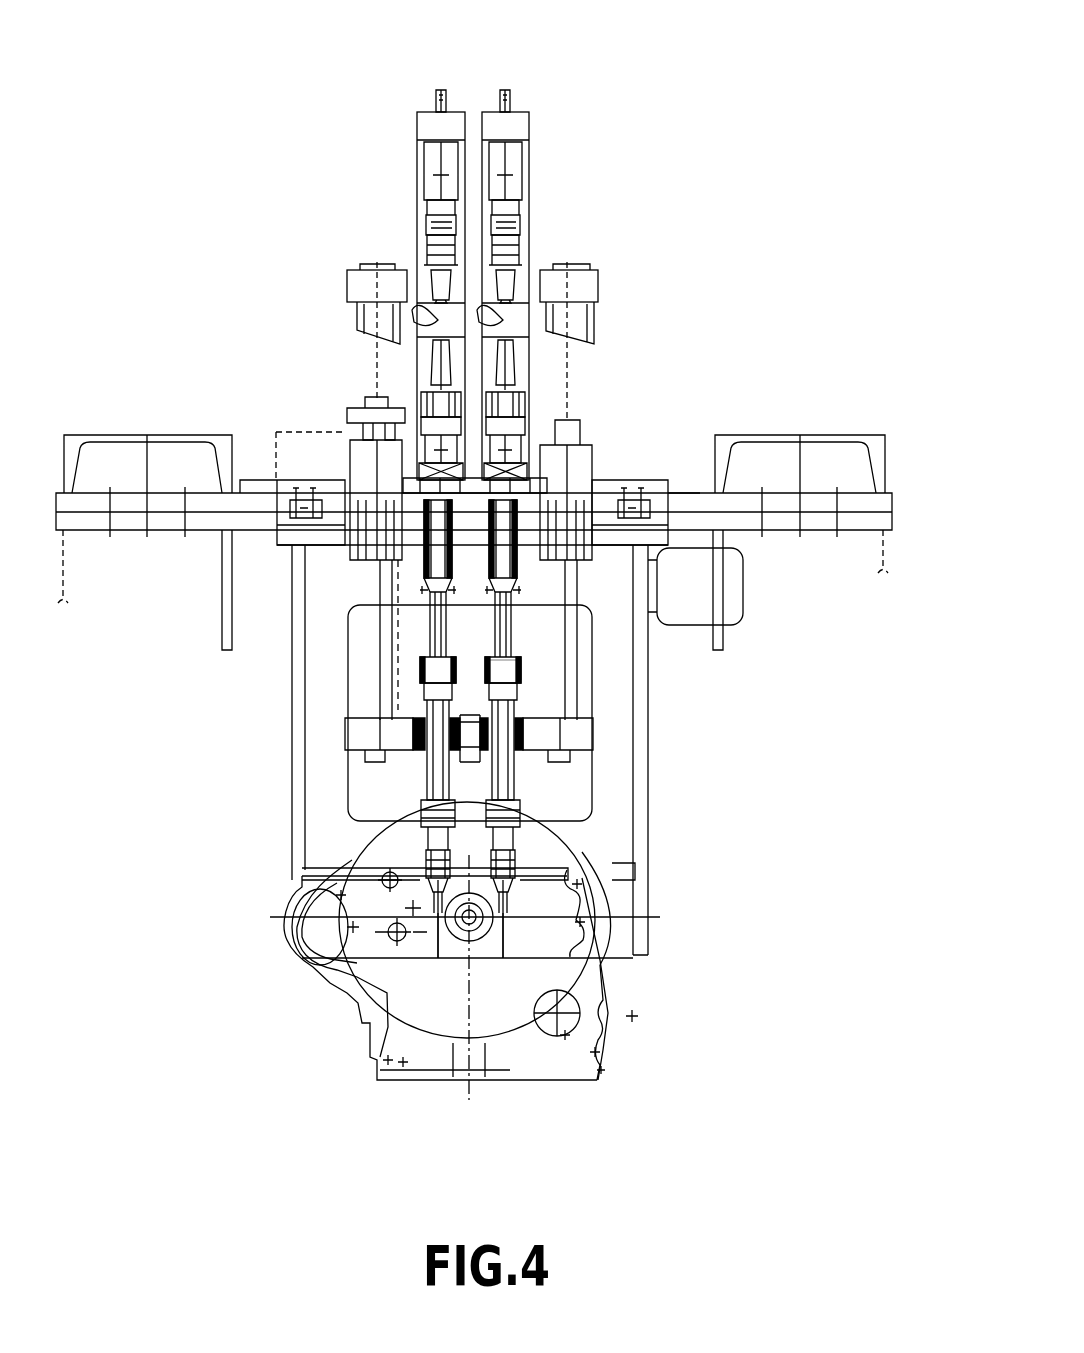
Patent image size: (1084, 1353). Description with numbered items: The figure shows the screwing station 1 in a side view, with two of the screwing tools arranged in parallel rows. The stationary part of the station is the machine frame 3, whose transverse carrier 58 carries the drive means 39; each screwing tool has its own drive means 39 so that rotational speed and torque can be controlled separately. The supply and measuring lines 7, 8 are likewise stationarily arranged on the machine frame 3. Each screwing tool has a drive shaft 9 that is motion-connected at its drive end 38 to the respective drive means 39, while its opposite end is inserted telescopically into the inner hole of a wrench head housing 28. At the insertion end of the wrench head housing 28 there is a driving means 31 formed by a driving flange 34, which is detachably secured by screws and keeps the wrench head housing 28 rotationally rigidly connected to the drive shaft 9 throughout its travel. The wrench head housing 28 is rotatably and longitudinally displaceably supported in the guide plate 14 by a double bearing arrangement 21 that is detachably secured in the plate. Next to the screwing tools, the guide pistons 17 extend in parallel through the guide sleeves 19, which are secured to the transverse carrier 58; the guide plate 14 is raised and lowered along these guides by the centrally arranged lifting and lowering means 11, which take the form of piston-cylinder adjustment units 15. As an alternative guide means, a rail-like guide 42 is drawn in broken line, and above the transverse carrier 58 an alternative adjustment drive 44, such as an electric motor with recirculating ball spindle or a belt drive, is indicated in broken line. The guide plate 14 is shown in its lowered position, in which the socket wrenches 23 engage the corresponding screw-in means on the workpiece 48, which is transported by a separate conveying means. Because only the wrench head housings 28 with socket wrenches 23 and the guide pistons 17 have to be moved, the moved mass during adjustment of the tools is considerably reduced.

The screwing station 1 is at (626, 80).
The machine frame 3 is at (199, 372).
The supply line 7 is at (539, 80).
The measuring line 8 is at (510, 102).
The drive shaft 9 is at (445, 612).
The lifting and lowering means 11 is at (475, 499).
The guide plate 14 is at (346, 735).
The piston-cylinder adjustment unit 15 is at (349, 264).
The guide piston 17 is at (376, 444).
The guide sleeve 19 is at (368, 462).
The double bearing arrangement 21 is at (530, 710).
The socket wrench 23 is at (494, 750).
The wrench head housing 28 is at (428, 690).
The driving means 31 is at (386, 640).
The driving flange 34 is at (428, 665).
The drive end 38 is at (588, 462).
The drive means 39 is at (537, 187).
The rail-like guide 42 is at (396, 600).
The adjustment drive 44 is at (276, 433).
The workpiece 48 is at (598, 1022).
The transverse carrier 58 is at (892, 502).